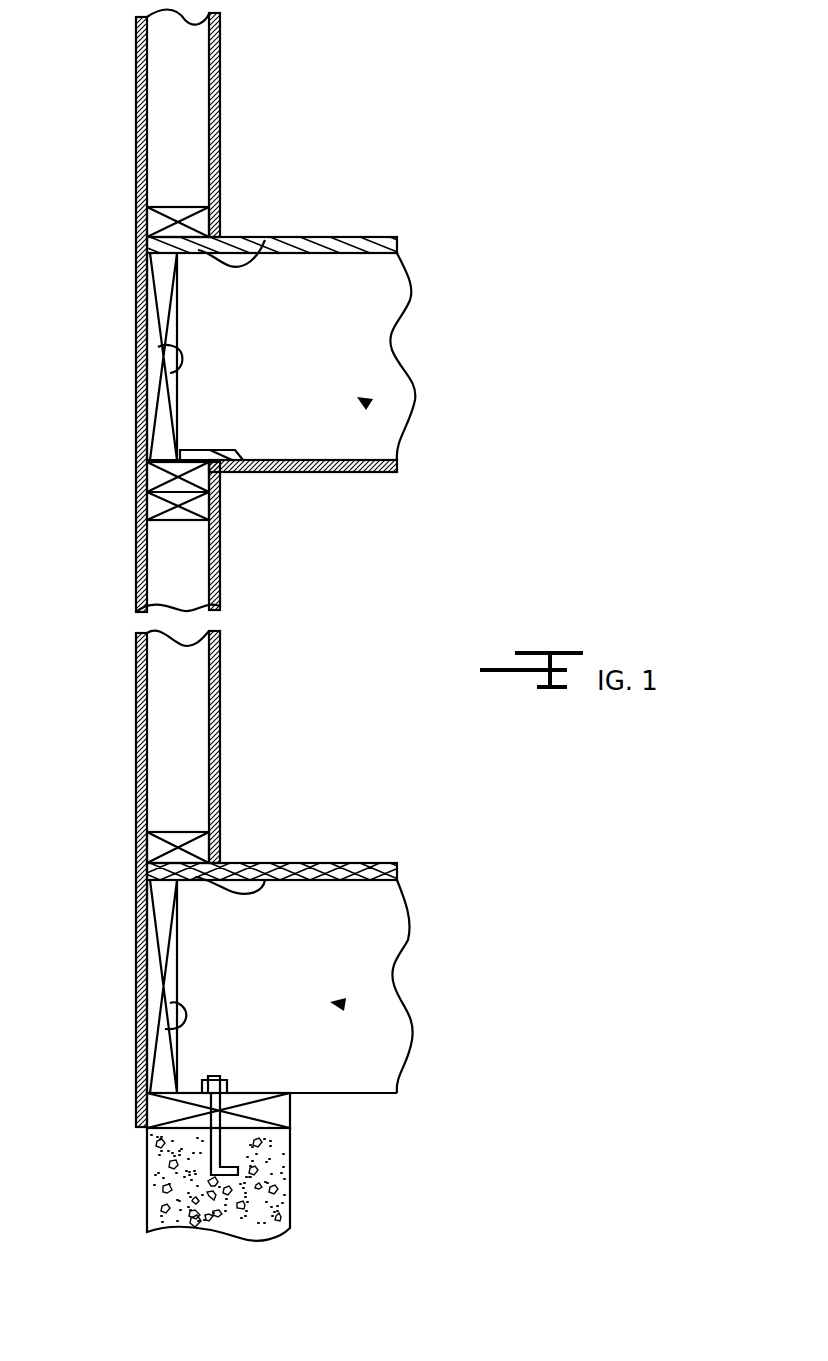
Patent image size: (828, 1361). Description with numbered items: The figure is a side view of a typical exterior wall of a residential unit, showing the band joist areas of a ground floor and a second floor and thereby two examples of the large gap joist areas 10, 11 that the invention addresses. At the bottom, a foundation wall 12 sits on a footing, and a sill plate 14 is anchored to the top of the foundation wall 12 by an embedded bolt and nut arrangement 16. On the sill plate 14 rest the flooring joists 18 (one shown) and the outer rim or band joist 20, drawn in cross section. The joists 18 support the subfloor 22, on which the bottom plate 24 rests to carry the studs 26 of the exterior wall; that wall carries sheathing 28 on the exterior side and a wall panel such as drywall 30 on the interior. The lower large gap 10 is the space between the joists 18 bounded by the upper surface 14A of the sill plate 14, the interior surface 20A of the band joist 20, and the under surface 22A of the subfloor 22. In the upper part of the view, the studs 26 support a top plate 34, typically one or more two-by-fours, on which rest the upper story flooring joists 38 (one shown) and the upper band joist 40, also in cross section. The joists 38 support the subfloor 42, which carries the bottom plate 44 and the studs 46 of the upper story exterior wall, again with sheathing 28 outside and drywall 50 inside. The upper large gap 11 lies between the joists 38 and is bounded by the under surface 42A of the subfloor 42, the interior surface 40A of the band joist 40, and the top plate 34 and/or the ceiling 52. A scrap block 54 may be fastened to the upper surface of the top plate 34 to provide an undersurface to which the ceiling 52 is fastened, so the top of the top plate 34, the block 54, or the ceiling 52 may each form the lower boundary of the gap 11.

The large gap joist area 10 is at (343, 1004).
The large gap joist space 11 is at (366, 403).
The foundation wall 12 is at (155, 1203).
The sill plate 14 is at (272, 1112).
The upper surface of sill plate 14A is at (243, 1093).
The embedded bolt and nut arrangement 16 is at (213, 1140).
The flooring joist 18 is at (320, 977).
The band joist 20 is at (152, 990).
The interior surface of band joist 20A is at (165, 1029).
The subfloor 22 is at (333, 872).
The under surface of subfloor 22A is at (265, 880).
The bottom plate 24 is at (153, 848).
The studs 26 is at (189, 733).
The sheathing 28 is at (137, 688).
The drywall 30 is at (213, 690).
The top plate 34 is at (152, 465).
The upper story flooring joist 38 is at (310, 367).
The band joist 40 is at (152, 327).
The interior surface of band joist 40A is at (170, 373).
The subfloor 42 is at (352, 245).
The under surface of subfloor 42A is at (265, 240).
The bottom plate 44 is at (152, 217).
The studs 46 is at (190, 108).
The drywall 50 is at (217, 118).
The ceiling 52 is at (323, 472).
The scrap block 54 is at (217, 453).